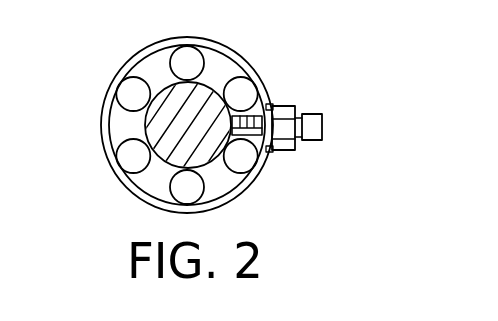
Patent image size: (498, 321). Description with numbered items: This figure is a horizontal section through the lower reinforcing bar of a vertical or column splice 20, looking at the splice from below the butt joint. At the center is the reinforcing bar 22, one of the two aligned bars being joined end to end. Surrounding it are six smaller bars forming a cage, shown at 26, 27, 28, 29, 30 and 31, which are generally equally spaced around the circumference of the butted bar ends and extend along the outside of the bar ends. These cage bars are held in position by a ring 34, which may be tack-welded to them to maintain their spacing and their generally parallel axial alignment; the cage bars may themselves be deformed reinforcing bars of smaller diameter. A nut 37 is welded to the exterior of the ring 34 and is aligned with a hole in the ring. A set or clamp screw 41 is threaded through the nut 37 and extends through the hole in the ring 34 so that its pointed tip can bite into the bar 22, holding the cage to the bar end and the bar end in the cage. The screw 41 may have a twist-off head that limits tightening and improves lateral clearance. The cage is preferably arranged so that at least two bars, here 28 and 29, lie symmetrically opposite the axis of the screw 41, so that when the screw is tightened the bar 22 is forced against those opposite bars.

The column splice 20 is at (312, 93).
The reinforcing bar 22 is at (158, 122).
The cage bar 26 is at (247, 162).
The cage bar 27 is at (190, 188).
The cage bar 28 is at (134, 158).
The cage bar 29 is at (133, 92).
The cage bar 30 is at (188, 64).
The cage bar 31 is at (247, 90).
The ring 34 is at (142, 50).
The nut 37 is at (287, 150).
The set screw 41 is at (322, 128).